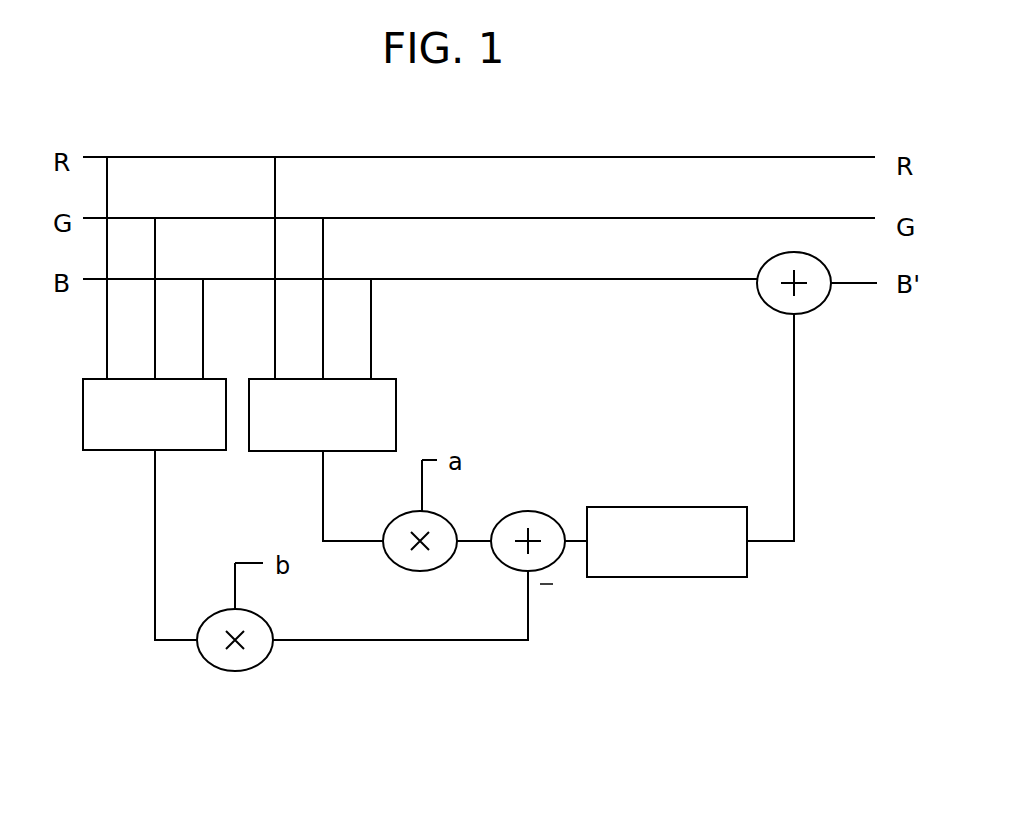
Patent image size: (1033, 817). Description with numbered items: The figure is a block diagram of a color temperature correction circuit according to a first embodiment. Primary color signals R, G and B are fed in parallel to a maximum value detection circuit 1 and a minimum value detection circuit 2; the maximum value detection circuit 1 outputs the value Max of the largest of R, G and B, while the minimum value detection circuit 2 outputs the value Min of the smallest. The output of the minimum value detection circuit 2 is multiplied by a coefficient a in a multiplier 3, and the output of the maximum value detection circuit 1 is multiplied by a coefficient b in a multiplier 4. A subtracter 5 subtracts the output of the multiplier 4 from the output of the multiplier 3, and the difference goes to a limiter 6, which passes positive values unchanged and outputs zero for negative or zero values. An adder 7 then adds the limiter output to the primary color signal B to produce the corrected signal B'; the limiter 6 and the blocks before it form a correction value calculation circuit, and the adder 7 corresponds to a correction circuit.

The maximum value detection circuit 1 is at (97, 450).
The minimum value detection circuit 2 is at (396, 387).
The multiplier 3 is at (398, 567).
The multiplier 4 is at (204, 660).
The subtracter 5 is at (505, 567).
The limiter 6 is at (673, 577).
The adder 7 is at (813, 313).